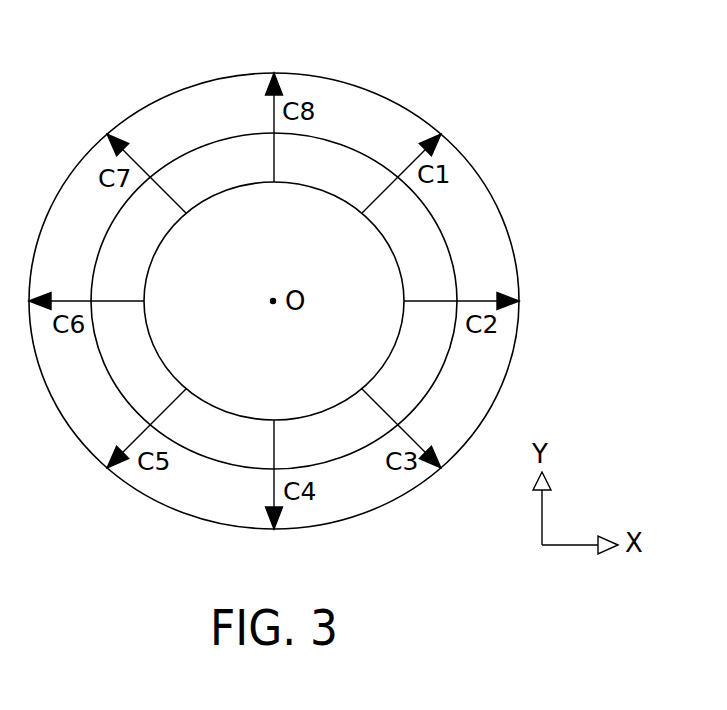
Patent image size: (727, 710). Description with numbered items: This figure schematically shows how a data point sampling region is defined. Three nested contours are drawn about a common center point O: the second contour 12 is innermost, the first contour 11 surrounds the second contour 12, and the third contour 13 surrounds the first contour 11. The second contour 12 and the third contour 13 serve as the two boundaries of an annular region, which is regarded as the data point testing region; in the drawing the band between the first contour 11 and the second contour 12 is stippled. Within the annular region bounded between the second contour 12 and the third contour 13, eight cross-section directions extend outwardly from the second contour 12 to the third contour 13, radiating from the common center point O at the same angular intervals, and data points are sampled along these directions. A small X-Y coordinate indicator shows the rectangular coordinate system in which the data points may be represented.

The first contour 11 is at (205, 143).
The second contour 12 is at (243, 185).
The third contour 13 is at (333, 79).